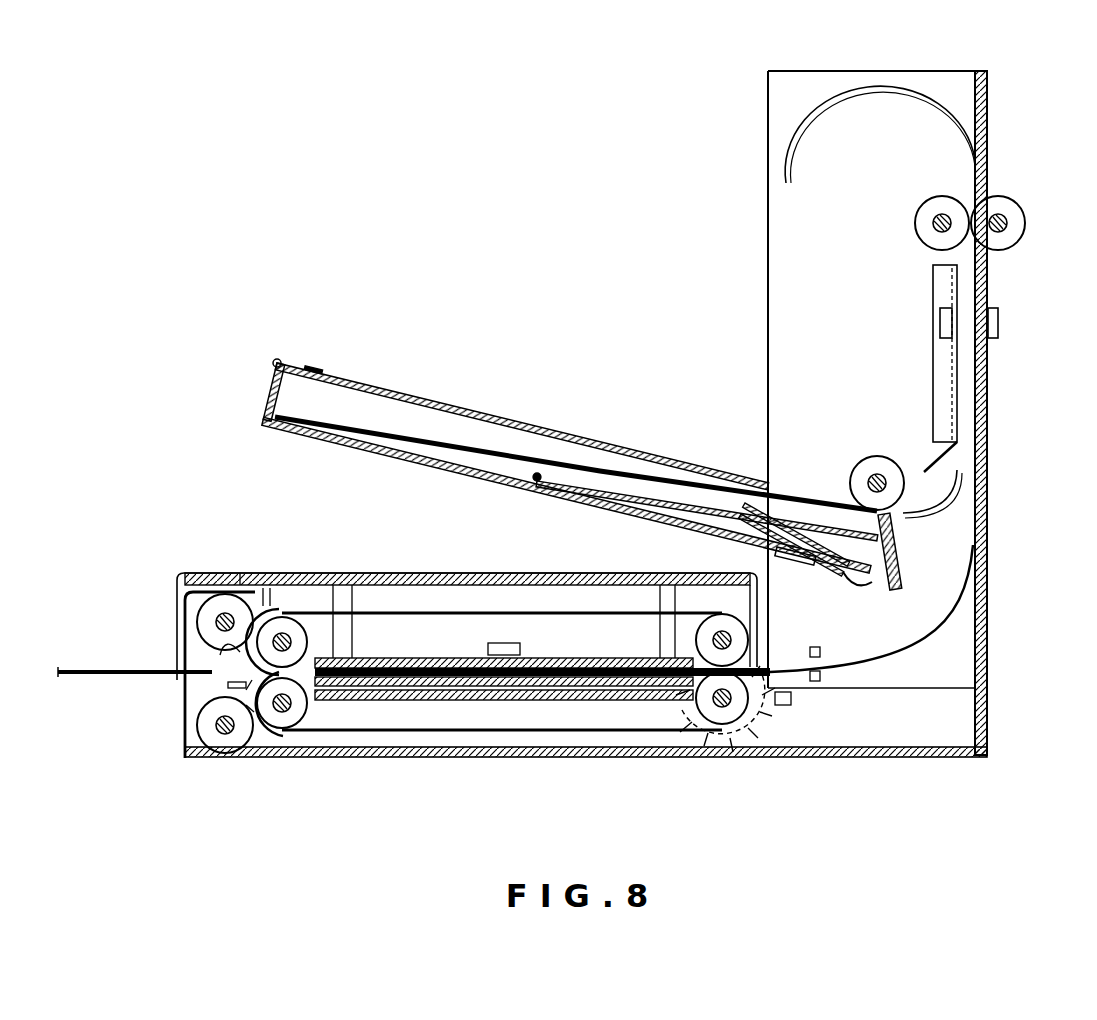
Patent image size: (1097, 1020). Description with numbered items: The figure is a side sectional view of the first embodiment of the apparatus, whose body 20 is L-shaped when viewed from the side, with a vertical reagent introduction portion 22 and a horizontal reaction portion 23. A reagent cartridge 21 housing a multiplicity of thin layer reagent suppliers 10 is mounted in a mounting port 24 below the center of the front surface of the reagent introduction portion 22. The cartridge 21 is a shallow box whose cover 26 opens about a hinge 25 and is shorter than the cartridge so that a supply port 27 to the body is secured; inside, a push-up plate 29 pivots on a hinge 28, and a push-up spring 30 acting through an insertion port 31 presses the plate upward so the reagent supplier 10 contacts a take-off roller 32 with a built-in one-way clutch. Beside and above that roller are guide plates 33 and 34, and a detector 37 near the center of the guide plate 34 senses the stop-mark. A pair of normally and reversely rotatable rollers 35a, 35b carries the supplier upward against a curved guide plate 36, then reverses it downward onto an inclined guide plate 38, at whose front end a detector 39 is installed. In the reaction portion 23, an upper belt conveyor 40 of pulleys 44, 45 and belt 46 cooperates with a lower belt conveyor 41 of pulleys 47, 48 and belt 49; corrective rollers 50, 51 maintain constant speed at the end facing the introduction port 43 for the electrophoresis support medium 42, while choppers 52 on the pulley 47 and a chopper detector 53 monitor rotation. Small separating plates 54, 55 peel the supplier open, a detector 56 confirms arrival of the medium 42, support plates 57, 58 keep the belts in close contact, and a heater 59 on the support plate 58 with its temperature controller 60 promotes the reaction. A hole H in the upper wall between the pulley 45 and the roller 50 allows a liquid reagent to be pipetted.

The thin layer reagent supplier 10 is at (452, 448).
The body 20 is at (998, 118).
The reagent cartridge 21 is at (262, 412).
The reagent introduction portion 22 is at (775, 90).
The reaction portion 23 is at (172, 578).
The mounting port 24 is at (800, 505).
The hinge 25 is at (302, 368).
The cover 26 is at (380, 388).
The supply port 27 is at (768, 470).
The hinge 28 is at (537, 472).
The push-up plate 29 is at (640, 492).
The push-up spring 30 is at (866, 586).
The insertion port 31 is at (795, 562).
The take-off roller 32 is at (877, 458).
The guide plate 33 is at (962, 490).
The guide plate 34 is at (958, 370).
The roller 35a is at (920, 215).
The roller 35b is at (1018, 215).
The curved guide plate 36 is at (790, 150).
The detector 37 is at (940, 322).
The inclined guide plate 38 is at (950, 620).
The detector 39 is at (822, 672).
The upper belt conveyor 40 is at (362, 605).
The lower belt conveyor 41 is at (385, 733).
The electrophoresis support medium 42 is at (75, 668).
The introduction port 43 is at (228, 685).
The pulley 44 is at (716, 614).
The pulley 45 is at (284, 615).
The belt 46 is at (545, 611).
The pulley 47 is at (720, 726).
The pulley 48 is at (282, 730).
The belt 49 is at (480, 705).
The corrective roller 50 is at (216, 598).
The corrective roller 51 is at (225, 750).
The chopper 52 is at (752, 736).
The chopper detector 53 is at (790, 706).
The small separating plate 54 is at (215, 655).
The small separating plate 55 is at (246, 706).
The electrophoresis support medium detector 56 is at (246, 690).
The support plate 57 is at (420, 656).
The support plate 58 is at (615, 695).
The heater 59 is at (552, 690).
The temperature controller 60 is at (500, 643).
The hole H is at (240, 573).